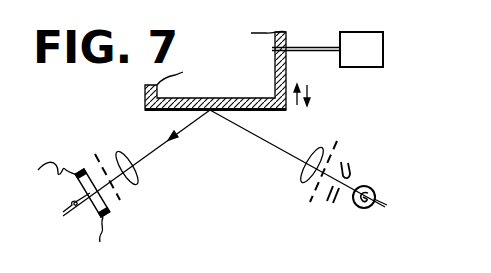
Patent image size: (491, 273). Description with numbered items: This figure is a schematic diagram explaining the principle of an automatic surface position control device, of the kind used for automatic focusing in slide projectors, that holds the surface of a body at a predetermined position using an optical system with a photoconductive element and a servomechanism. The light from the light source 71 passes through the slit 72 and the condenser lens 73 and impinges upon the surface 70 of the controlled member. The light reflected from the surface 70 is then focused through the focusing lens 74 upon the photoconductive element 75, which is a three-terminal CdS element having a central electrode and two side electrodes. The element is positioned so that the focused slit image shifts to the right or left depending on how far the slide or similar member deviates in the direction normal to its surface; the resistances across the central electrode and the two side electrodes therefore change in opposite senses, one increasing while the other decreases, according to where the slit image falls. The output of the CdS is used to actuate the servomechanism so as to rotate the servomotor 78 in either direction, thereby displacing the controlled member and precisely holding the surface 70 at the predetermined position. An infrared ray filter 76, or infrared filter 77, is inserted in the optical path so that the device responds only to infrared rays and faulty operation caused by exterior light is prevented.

The surface of a controlled member 70 is at (161, 110).
The light source 71 is at (372, 189).
The slit 72 is at (350, 165).
The condenser lens 73 is at (311, 182).
The focusing lens 74 is at (140, 180).
The three-terminal photoconductive element 75 is at (106, 214).
The infrared ray filter 76 is at (338, 157).
The infrared filter 77 is at (118, 195).
The servomotor 78 is at (383, 46).